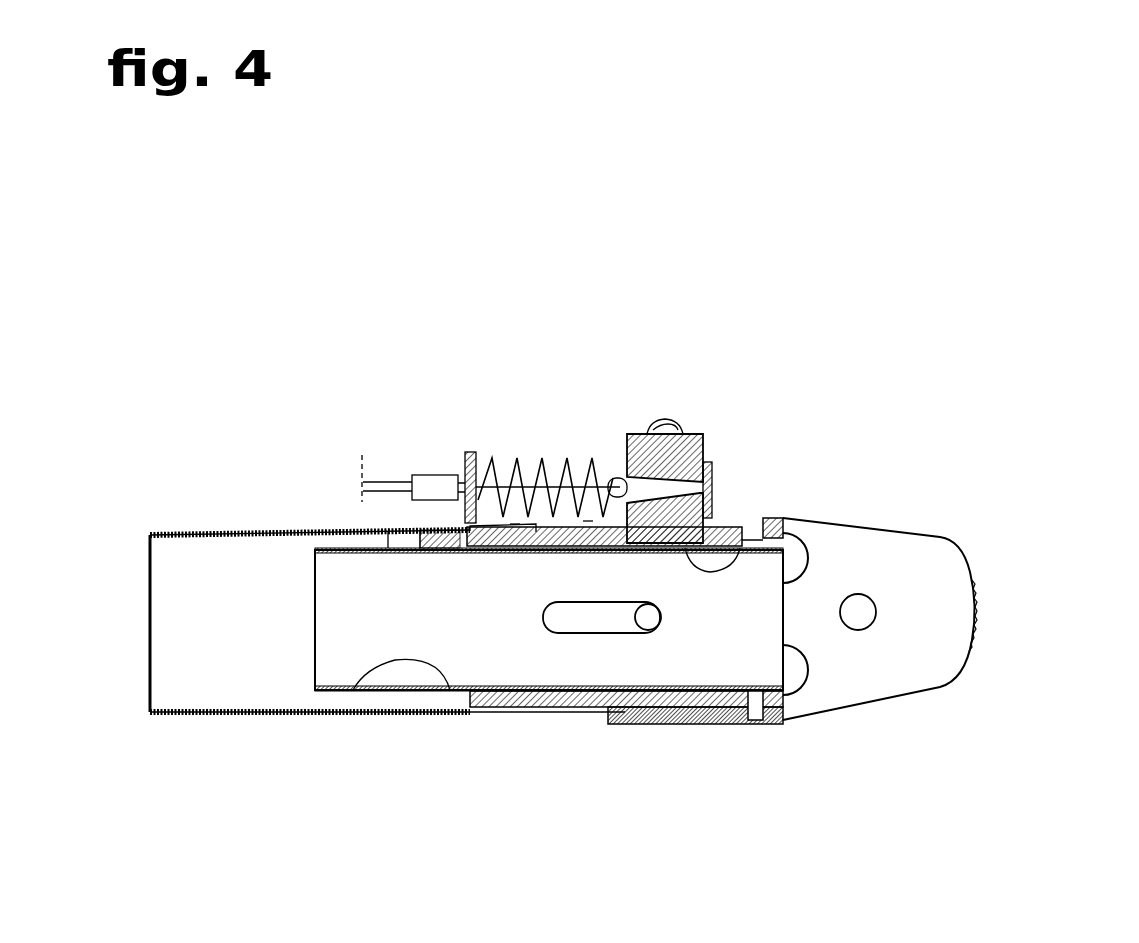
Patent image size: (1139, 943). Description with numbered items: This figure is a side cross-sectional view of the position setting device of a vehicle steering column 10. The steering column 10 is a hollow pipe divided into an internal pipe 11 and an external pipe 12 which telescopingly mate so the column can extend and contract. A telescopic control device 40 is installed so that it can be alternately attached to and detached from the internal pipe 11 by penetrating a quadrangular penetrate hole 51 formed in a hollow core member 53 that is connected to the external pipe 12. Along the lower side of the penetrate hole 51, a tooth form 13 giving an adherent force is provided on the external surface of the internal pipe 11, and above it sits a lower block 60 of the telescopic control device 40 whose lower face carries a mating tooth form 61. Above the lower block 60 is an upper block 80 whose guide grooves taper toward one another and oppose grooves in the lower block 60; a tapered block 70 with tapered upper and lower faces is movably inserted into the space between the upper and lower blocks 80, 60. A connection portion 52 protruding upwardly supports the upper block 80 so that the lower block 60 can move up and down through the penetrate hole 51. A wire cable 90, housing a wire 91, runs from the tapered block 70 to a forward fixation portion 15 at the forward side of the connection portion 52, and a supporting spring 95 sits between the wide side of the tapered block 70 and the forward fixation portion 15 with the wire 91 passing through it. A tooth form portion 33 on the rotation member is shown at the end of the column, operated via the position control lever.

The steering column 10 is at (203, 506).
The internal pipe 11 is at (365, 692).
The external pipe 12 is at (210, 713).
The tooth form 13 is at (375, 546).
The forward fixation portion 15 is at (465, 452).
The tooth form portion 33 is at (975, 640).
The telescopic control device 40 is at (660, 395).
The penetrate hole 51 is at (745, 540).
The connection portion 52 is at (655, 425).
The hollow core member 53 is at (648, 726).
The lower block 60 is at (600, 465).
The tooth form 61 is at (745, 548).
The tapered block 70 is at (607, 470).
The upper block 80 is at (697, 432).
The wire cable 90 is at (390, 481).
The wire 91 is at (515, 523).
The supporting spring 95 is at (588, 520).